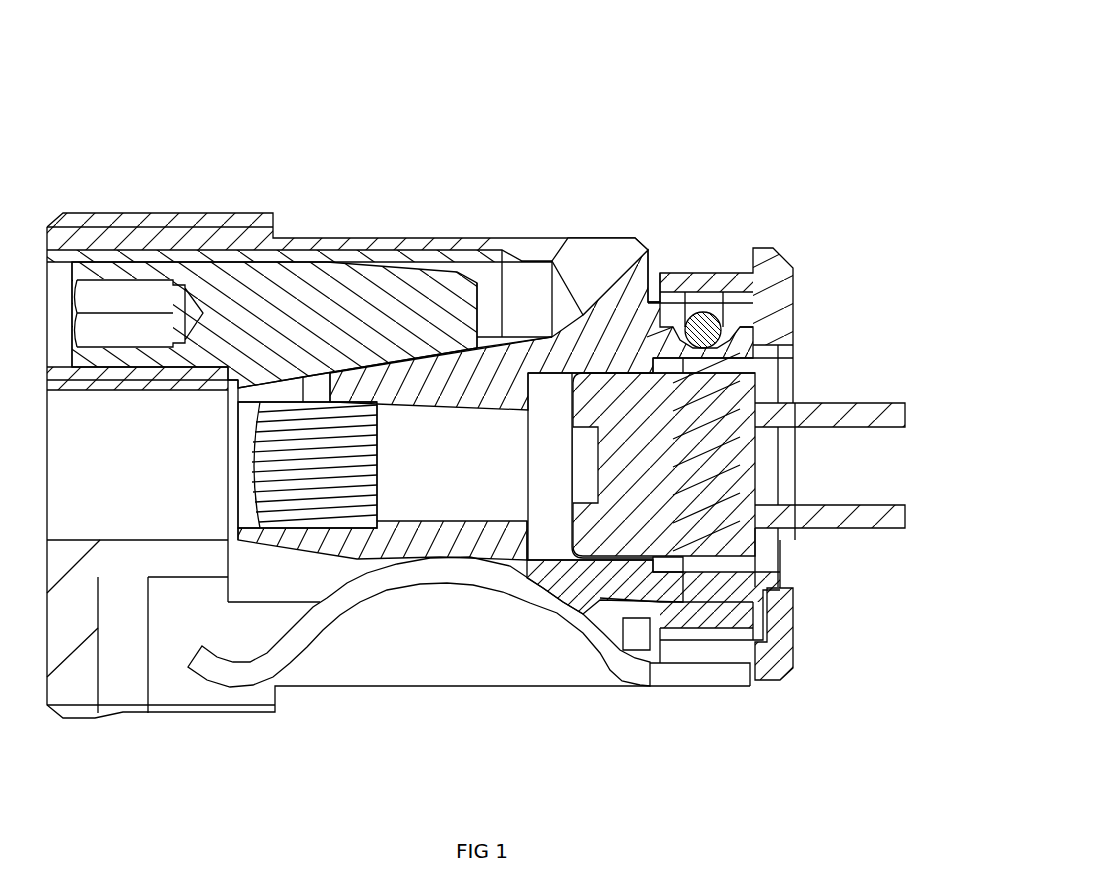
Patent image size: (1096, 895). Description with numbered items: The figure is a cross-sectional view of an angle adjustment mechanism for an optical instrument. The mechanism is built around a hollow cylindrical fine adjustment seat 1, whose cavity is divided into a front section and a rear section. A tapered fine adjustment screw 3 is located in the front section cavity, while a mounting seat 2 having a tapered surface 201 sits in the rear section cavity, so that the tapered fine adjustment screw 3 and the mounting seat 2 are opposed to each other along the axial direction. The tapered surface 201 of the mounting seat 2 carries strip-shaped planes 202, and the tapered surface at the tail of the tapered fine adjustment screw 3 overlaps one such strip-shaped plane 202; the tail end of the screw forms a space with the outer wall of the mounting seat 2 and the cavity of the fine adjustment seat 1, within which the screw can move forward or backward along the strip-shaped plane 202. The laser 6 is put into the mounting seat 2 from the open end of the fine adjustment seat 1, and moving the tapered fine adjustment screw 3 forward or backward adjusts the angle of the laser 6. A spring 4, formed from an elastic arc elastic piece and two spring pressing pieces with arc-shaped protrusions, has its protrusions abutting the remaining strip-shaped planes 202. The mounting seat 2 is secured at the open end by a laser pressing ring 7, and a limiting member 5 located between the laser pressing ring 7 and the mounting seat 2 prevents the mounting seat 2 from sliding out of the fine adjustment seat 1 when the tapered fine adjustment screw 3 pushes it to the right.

The fine adjustment seat 1 is at (587, 255).
The mounting seat 2 is at (616, 355).
The tapered surface 201 is at (356, 562).
The strip-shaped plane 202 is at (494, 346).
The tapered fine adjustment screw 3 is at (447, 285).
The spring 4 is at (594, 654).
The limiting member 5 is at (703, 331).
The laser 6 is at (620, 530).
The laser pressing ring 7 is at (785, 625).